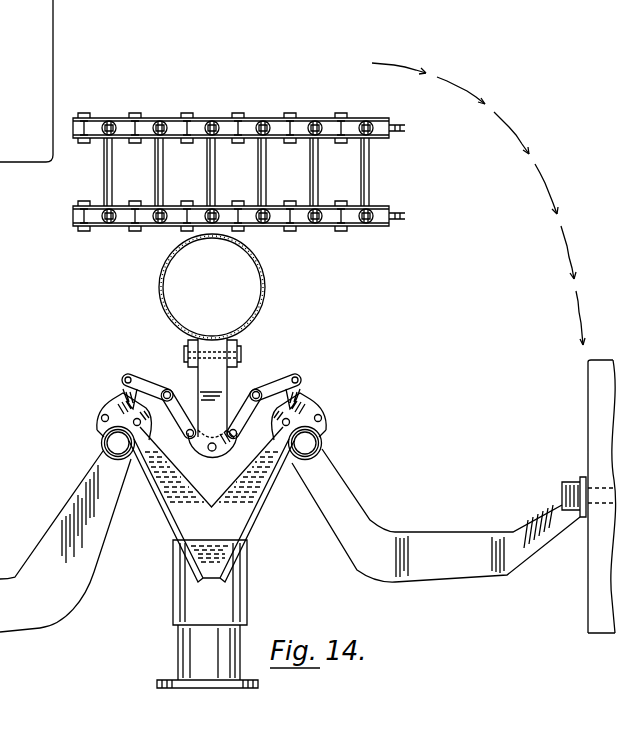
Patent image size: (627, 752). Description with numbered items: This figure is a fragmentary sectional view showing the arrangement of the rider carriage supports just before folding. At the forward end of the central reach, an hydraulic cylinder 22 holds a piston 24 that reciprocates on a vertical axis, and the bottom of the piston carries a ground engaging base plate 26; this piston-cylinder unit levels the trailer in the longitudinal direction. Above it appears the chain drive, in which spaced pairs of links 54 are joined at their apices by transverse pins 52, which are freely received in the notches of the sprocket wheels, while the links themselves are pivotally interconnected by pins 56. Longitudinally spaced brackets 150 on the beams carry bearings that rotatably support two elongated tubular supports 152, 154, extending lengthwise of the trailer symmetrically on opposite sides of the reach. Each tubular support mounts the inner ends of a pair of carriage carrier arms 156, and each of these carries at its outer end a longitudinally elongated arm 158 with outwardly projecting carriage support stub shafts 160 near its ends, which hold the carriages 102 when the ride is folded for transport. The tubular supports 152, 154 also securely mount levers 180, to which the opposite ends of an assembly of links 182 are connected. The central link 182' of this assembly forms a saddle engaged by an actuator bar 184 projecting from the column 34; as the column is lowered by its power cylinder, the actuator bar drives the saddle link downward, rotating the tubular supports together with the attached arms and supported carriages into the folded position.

The hydraulic cylinder 22 is at (233, 596).
The piston 24 is at (180, 650).
The ground engaging base plate 26 is at (157, 683).
The column 34 is at (266, 289).
The transverse pins 52 is at (160, 178).
The links 54 is at (303, 120).
The pins 56 is at (178, 127).
The carriage 102 is at (600, 634).
The brackets 150 is at (180, 518).
The tubular support 152 is at (103, 437).
The tubular support 154 is at (325, 445).
The carriage carrier arms 156 is at (365, 512).
The longitudinally elongated arm 158 is at (562, 492).
The carriage support stub shaft 160 is at (605, 488).
The levers 180 is at (307, 412).
The links 182 is at (211, 394).
The central link 182' is at (212, 458).
The actuator bar 184 is at (223, 380).